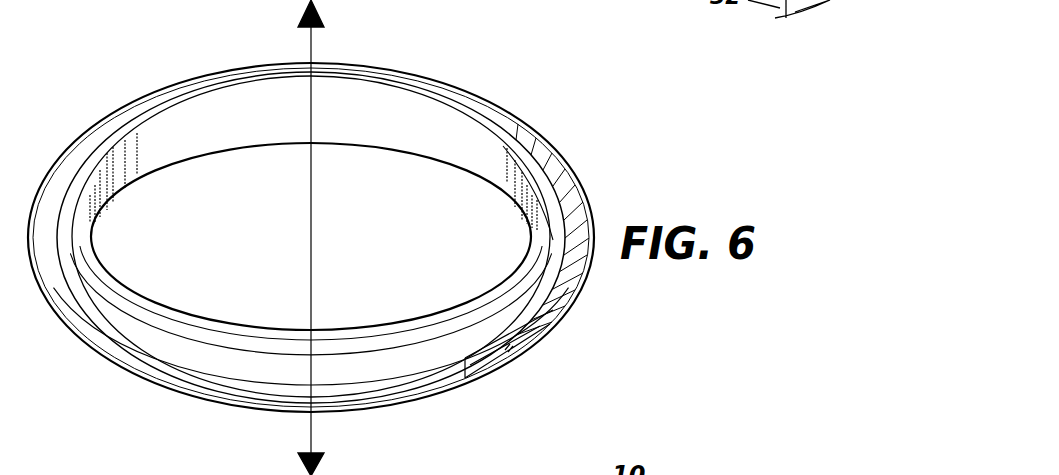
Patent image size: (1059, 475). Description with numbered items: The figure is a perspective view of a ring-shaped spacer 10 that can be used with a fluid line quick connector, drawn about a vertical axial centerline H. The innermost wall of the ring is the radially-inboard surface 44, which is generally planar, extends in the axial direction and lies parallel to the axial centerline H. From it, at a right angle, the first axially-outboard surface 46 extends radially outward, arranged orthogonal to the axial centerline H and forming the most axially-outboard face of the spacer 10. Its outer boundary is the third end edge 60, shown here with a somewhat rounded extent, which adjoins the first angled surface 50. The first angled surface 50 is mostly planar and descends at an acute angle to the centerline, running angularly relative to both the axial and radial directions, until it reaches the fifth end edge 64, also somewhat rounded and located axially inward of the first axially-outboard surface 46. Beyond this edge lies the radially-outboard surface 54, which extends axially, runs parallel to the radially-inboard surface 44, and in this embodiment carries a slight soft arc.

The spacer 10 is at (489, 101).
The radially-inboard surface 44 is at (177, 140).
The first axially-outboard surface 46 is at (447, 317).
The first angled surface 50 is at (563, 277).
The radially-outboard surface 54 is at (427, 383).
The third end edge 60 is at (563, 184).
The fifth end edge 64 is at (553, 312).
The axial centerline H is at (316, 217).